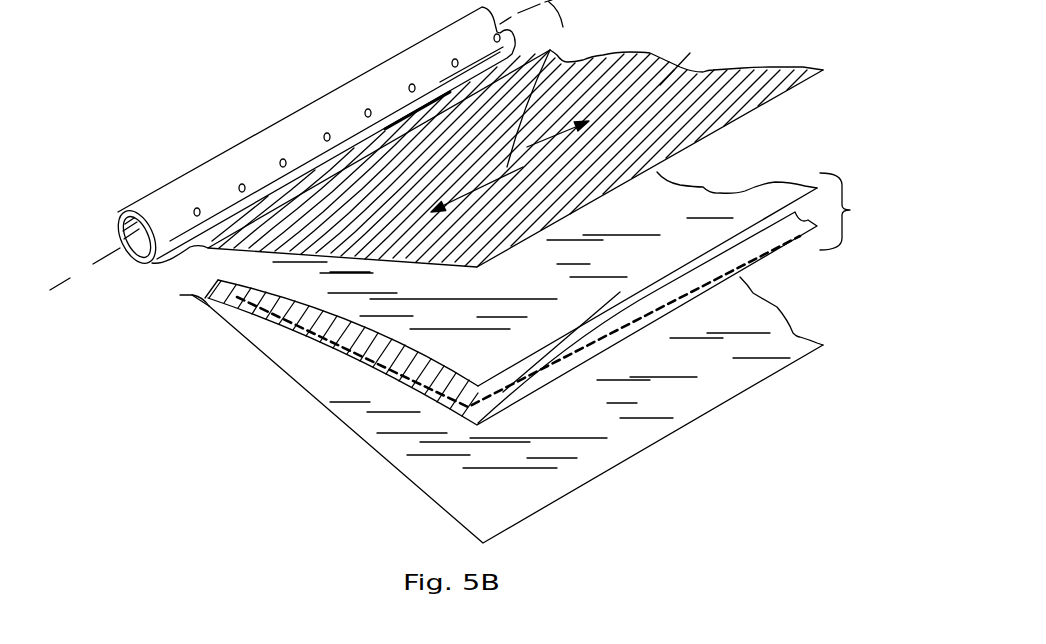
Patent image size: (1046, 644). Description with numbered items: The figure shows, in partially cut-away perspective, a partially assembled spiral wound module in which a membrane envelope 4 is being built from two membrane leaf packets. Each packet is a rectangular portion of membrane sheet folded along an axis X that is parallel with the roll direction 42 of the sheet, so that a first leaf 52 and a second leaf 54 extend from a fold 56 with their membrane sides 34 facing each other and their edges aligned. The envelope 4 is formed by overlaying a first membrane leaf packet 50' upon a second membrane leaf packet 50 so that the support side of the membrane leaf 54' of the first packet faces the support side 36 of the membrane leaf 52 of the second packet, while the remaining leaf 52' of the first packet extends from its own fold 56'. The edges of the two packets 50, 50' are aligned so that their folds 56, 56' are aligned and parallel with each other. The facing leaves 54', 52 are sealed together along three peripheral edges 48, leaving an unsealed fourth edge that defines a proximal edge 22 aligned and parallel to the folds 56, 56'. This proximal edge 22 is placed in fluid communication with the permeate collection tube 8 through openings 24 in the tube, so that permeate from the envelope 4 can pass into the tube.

The membrane envelope 4 is at (846, 211).
The tube 8 is at (250, 137).
The proximal edge 22 is at (190, 295).
The openings 24 is at (325, 135).
The membrane side 34 is at (693, 200).
The support side 36 is at (663, 78).
The roll direction 42 is at (562, 57).
The peripheral edges 48 is at (272, 305).
The membrane leaf packet 50 is at (516, 424).
The first membrane leaf packet 50' is at (661, 168).
The first leaf 52 is at (533, 318).
The sheet edge 52' is at (686, 51).
The second leaf 54 is at (800, 311).
The membrane leaf 54' is at (751, 165).
The fold 56 is at (155, 326).
The fold 56' is at (150, 272).
The tube axis X is at (318, 145).